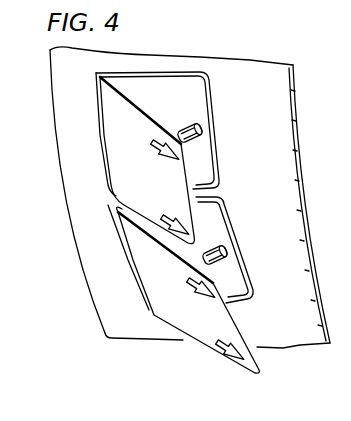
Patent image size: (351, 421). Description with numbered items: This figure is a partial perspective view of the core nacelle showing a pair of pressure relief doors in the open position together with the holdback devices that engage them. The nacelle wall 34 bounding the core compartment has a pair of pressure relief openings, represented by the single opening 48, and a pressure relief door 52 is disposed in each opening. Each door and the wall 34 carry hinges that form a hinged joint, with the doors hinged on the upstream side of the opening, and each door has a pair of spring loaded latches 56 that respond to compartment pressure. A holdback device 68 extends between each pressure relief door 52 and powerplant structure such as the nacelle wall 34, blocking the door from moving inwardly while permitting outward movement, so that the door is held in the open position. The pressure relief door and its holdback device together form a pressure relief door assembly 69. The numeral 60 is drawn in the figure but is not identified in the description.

The nacelle wall 34 is at (282, 196).
The pressure relief opening 48 is at (197, 161).
The pressure relief door 52 is at (118, 152).
The spring loaded latch 56 is at (160, 157).
The fold line 60 is at (167, 76).
The holdback device 68 is at (181, 129).
The pressure relief door assembly 69 is at (232, 291).